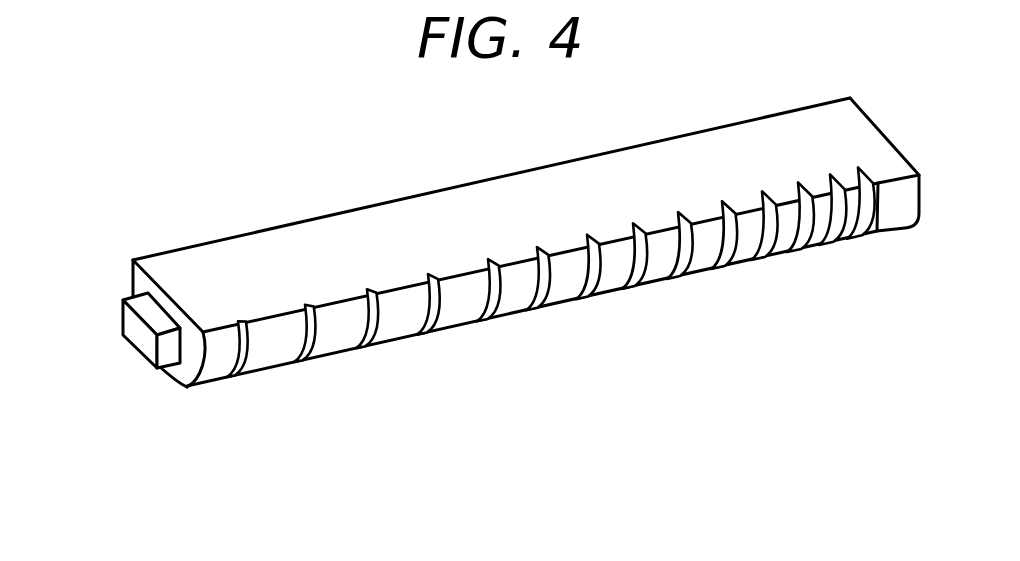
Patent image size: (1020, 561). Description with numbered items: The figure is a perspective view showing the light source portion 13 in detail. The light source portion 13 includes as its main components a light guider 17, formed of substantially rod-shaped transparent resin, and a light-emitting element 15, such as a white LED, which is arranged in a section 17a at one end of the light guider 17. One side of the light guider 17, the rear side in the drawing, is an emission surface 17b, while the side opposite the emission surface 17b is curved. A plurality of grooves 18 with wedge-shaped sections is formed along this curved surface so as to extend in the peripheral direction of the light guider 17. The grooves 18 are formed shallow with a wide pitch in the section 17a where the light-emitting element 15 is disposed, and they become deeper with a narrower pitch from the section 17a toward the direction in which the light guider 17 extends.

The light source portion 13 is at (213, 223).
The light-emitting element 15 is at (148, 345).
The light guider 17 is at (415, 233).
The section of the light guider 17a is at (182, 373).
The emission surface 17b is at (308, 219).
The grooves 18 is at (418, 342).